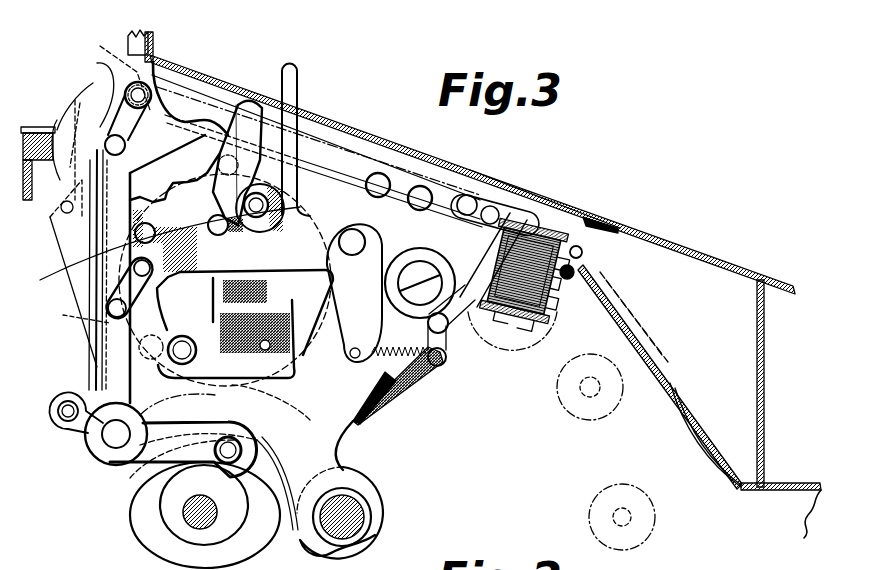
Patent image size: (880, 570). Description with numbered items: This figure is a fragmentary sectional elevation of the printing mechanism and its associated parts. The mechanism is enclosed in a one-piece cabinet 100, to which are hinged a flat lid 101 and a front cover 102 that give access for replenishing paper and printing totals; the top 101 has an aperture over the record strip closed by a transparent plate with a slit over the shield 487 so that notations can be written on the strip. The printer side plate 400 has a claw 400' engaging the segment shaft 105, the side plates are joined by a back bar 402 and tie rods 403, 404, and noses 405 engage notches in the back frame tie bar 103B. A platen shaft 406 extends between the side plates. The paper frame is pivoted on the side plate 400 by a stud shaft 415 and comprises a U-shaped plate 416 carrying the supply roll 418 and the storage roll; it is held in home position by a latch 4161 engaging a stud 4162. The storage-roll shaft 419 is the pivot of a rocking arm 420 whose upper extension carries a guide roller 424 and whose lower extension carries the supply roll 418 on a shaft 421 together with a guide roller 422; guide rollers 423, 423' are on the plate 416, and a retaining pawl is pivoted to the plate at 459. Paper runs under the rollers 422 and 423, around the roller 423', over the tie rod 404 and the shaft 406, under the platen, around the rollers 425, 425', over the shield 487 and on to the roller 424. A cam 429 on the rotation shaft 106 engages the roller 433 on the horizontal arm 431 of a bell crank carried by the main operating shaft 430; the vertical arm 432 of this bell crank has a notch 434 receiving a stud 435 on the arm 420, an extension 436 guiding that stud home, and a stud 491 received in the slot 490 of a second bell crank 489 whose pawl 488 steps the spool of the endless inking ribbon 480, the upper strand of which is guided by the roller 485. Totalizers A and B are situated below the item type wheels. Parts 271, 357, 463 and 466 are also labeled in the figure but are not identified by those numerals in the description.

The cabinet 100 is at (153, 46).
The flat lid 101 is at (706, 258).
The front cover 102 is at (764, 378).
The tie bar 103B is at (35, 125).
The segment shaft 105 is at (357, 507).
The rotation shaft 106 is at (184, 512).
The bar 271 is at (488, 176).
The solenoid 357 is at (547, 312).
The side plate 400 is at (378, 445).
The claw 400' is at (360, 513).
The back bar 402 is at (67, 147).
The tie rod 403 is at (68, 420).
The tie rod 404 is at (381, 180).
The nose 405 is at (75, 104).
The platen shaft 406 is at (426, 190).
The stud shaft 415 is at (427, 265).
The U-shaped plate 416 is at (398, 391).
The latch 4161 is at (272, 332).
The stud 4162 is at (274, 264).
The supply roll 418 is at (168, 400).
The shaft 419 is at (67, 270).
The rocking arm 420 is at (87, 92).
The shaft 421 is at (70, 318).
The paper guide roller 422 is at (230, 390).
The guide roller 423 is at (225, 283).
The guide roller 423' is at (196, 163).
The paper guide roller 424 is at (106, 74).
The roller 425 is at (605, 276).
The roller 425' is at (615, 256).
The cam 429 is at (160, 503).
The main operating shaft 430 is at (104, 440).
The horizontal arm 431 is at (130, 478).
The vertically extending arm 432 is at (110, 347).
The roller 433 is at (240, 444).
The notch 434 is at (161, 273).
The stud 435 is at (125, 146).
The extension 436 is at (187, 130).
The pivot 459 is at (318, 141).
The rod 463 is at (297, 94).
The plate 466 is at (256, 312).
The endless inking ribbon 480 is at (536, 322).
The guide roller 485 is at (526, 222).
The shield 487 is at (588, 270).
The pawl 488 is at (478, 355).
The bell crank 489 is at (369, 230).
The slot 490 is at (200, 266).
The stud 491 is at (110, 360).
The totalizer A is at (620, 378).
The totalizer B is at (650, 508).